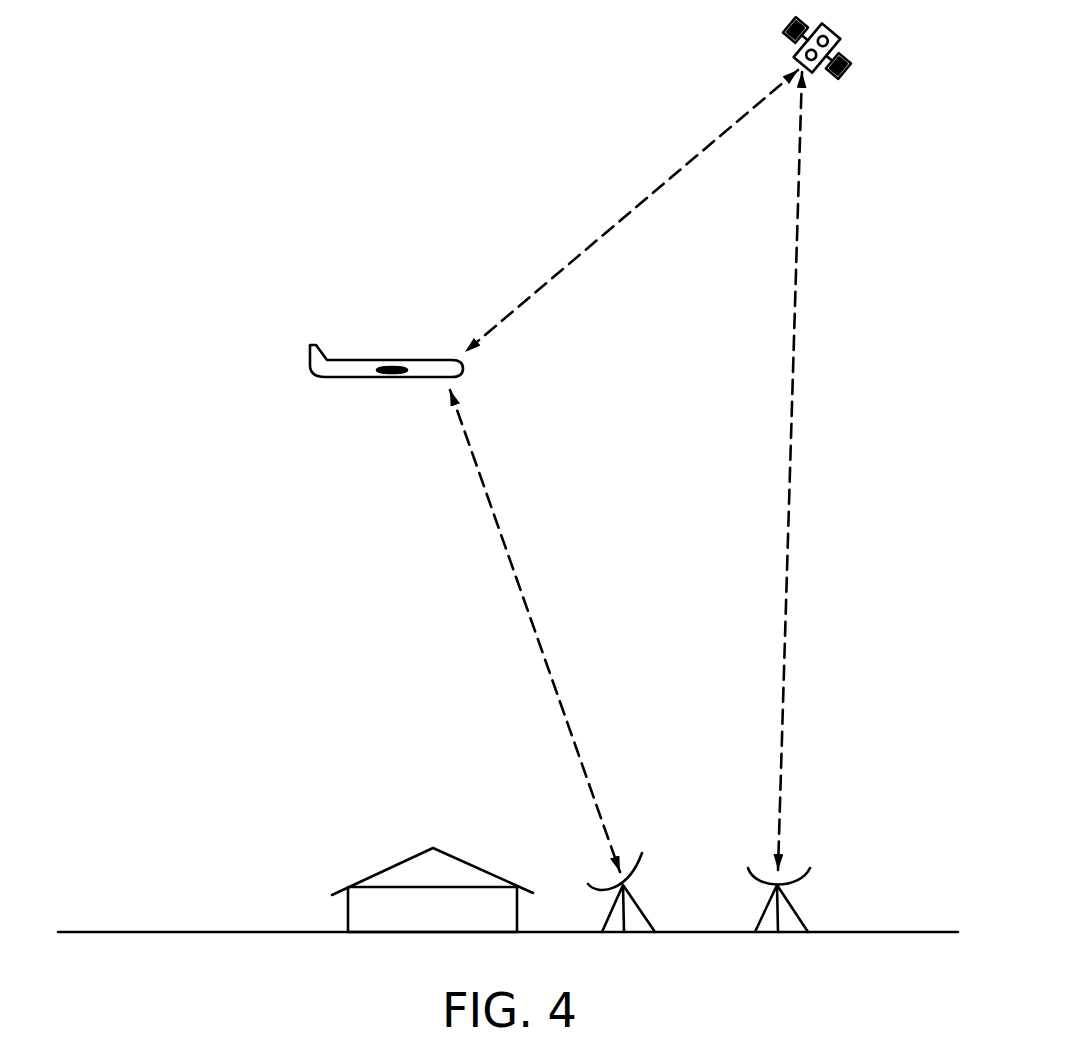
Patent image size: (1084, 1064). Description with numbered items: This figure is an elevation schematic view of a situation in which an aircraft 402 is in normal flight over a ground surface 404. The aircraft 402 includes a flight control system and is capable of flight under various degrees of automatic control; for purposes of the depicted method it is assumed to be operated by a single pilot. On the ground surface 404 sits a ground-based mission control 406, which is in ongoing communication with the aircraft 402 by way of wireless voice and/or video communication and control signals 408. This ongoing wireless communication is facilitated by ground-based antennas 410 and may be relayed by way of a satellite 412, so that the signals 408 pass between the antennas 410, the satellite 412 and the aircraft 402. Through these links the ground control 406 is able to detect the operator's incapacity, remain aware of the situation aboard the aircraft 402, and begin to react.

The aircraft 402 is at (375, 360).
The ground surface 404 is at (100, 932).
The ground-based mission control 406 is at (397, 862).
The wireless communication and control signals 408 is at (550, 280).
The ground-based antennas 410 is at (757, 917).
The satellite 412 is at (787, 27).